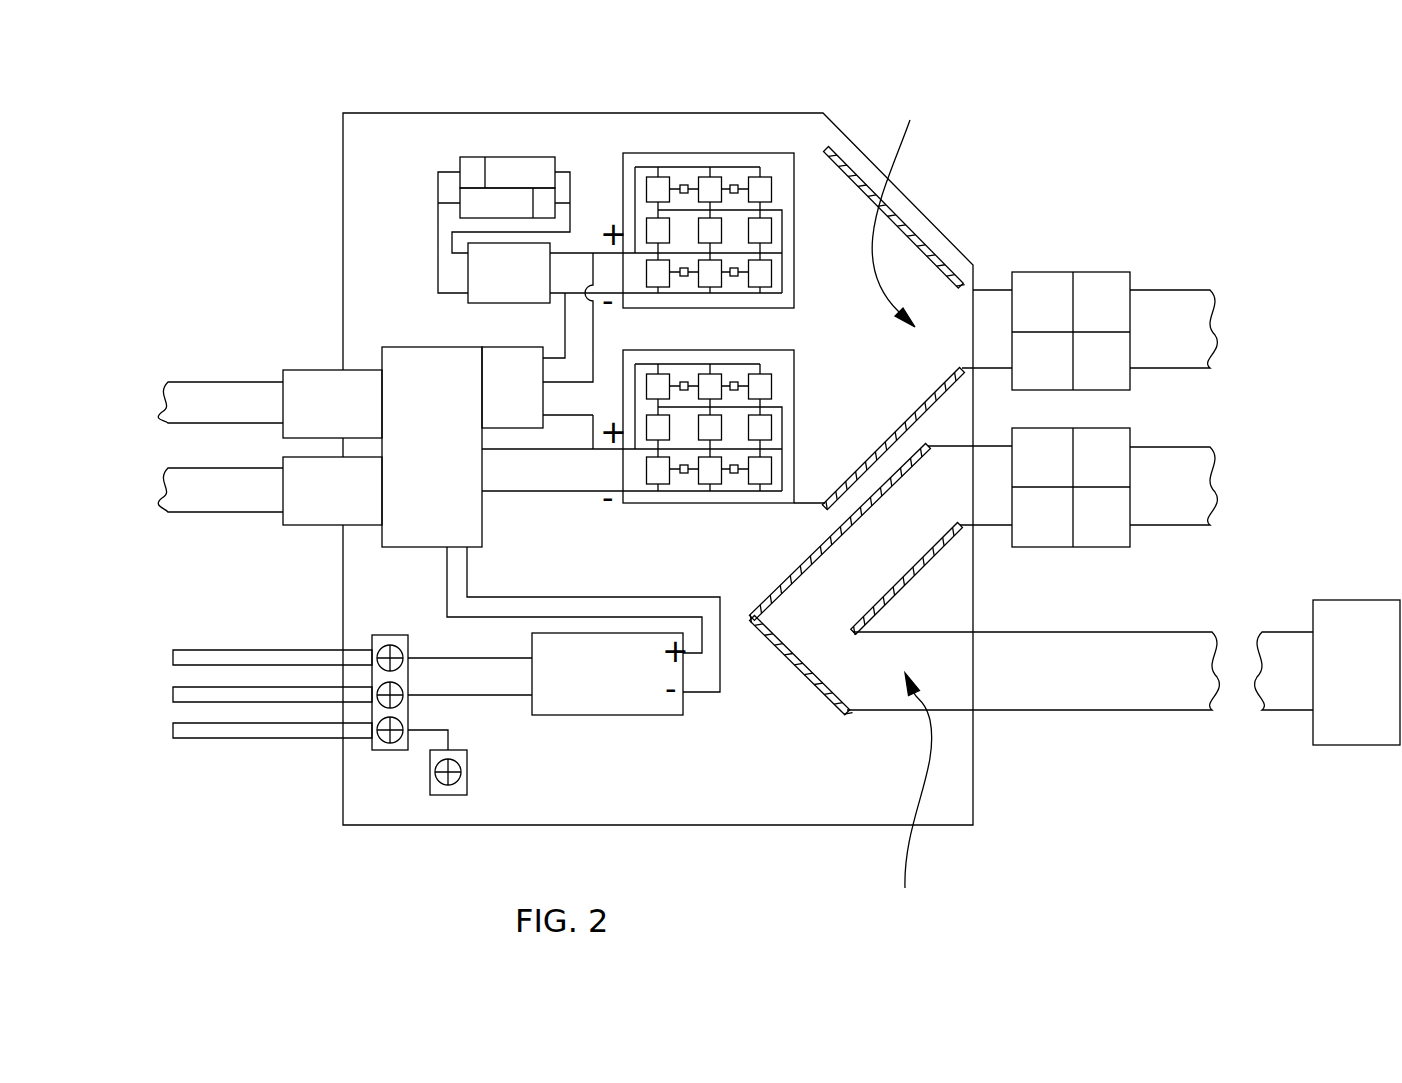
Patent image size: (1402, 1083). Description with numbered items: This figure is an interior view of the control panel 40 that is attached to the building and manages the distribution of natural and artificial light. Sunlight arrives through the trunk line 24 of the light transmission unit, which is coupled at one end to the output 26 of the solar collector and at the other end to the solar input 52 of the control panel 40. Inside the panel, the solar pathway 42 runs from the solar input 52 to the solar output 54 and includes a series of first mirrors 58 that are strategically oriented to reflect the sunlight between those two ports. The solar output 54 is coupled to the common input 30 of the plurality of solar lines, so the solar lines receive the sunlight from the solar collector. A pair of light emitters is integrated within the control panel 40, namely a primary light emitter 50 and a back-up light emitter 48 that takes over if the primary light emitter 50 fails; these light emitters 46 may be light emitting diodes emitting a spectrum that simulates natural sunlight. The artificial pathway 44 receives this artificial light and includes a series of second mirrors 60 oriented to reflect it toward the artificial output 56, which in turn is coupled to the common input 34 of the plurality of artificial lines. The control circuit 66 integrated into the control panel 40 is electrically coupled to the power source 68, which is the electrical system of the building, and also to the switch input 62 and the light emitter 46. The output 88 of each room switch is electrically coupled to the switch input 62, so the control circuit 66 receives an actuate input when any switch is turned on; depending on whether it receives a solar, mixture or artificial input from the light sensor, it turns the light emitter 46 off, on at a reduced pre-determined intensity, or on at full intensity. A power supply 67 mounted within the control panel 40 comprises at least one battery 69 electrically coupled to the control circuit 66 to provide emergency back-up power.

The trunk line 24 is at (1125, 710).
The output 26 is at (1353, 600).
The common input 30 is at (1180, 447).
The common input 34 is at (1172, 290).
The control panel 40 is at (420, 113).
The solar pathway 42 is at (908, 798).
The artificial pathway 44 is at (902, 207).
The light emitter 46 is at (777, 153).
The back-up light emitter 48 is at (715, 153).
The primary light emitter 50 is at (795, 350).
The solar input 52 is at (975, 673).
The solar output 54 is at (1093, 547).
The artificial output 56 is at (1090, 272).
The first mirrors 58 is at (880, 617).
The second mirrors 60 is at (947, 378).
The switch input 62 is at (317, 525).
The control circuit 66 is at (402, 347).
The power supply 67 is at (560, 157).
The power source 68 is at (312, 370).
The battery 69 is at (505, 157).
The output 88 is at (222, 512).